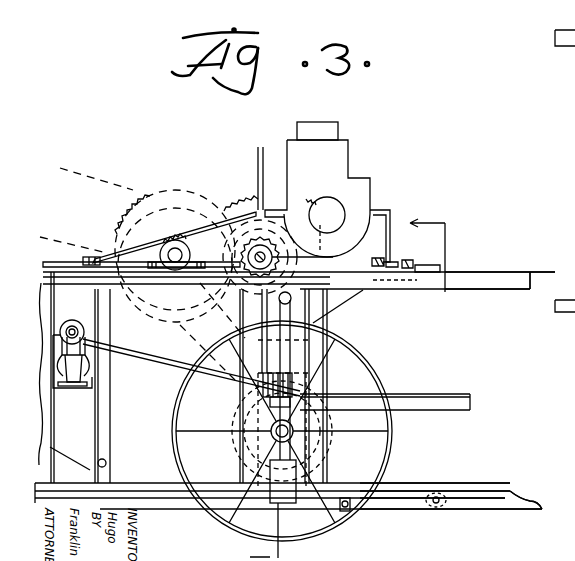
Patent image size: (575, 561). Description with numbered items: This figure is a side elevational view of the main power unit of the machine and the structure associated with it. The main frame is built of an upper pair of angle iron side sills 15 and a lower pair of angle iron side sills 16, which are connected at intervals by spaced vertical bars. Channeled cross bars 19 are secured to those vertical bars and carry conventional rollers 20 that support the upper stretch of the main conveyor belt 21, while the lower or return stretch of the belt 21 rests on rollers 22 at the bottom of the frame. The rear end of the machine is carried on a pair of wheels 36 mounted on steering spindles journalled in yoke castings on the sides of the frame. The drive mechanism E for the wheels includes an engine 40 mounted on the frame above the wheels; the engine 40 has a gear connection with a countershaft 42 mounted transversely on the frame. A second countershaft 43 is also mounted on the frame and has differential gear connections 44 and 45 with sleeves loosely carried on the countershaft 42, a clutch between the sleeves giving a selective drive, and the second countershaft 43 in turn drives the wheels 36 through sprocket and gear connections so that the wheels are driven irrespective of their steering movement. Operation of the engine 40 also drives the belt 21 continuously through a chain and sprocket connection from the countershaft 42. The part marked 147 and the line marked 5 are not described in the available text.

The drive mechanism E is at (347, 140).
The engine 40 is at (345, 209).
The section line 5- 5 is at (355, 380).
The cam follower block 147 is at (450, 263).
The upper angle iron side sills 15 is at (497, 287).
The countershaft 42 is at (299, 257).
The second countershaft 43 is at (177, 254).
The differential gear connection 44 is at (134, 193).
The differential gear connection 45 is at (176, 241).
The rollers 20 is at (86, 342).
The channeled cross bars 19 is at (69, 391).
The wheels 36 is at (373, 365).
The main conveyor belt 21 is at (439, 398).
The lower angle iron side sills 16 is at (480, 504).
The rollers 22 is at (440, 515).